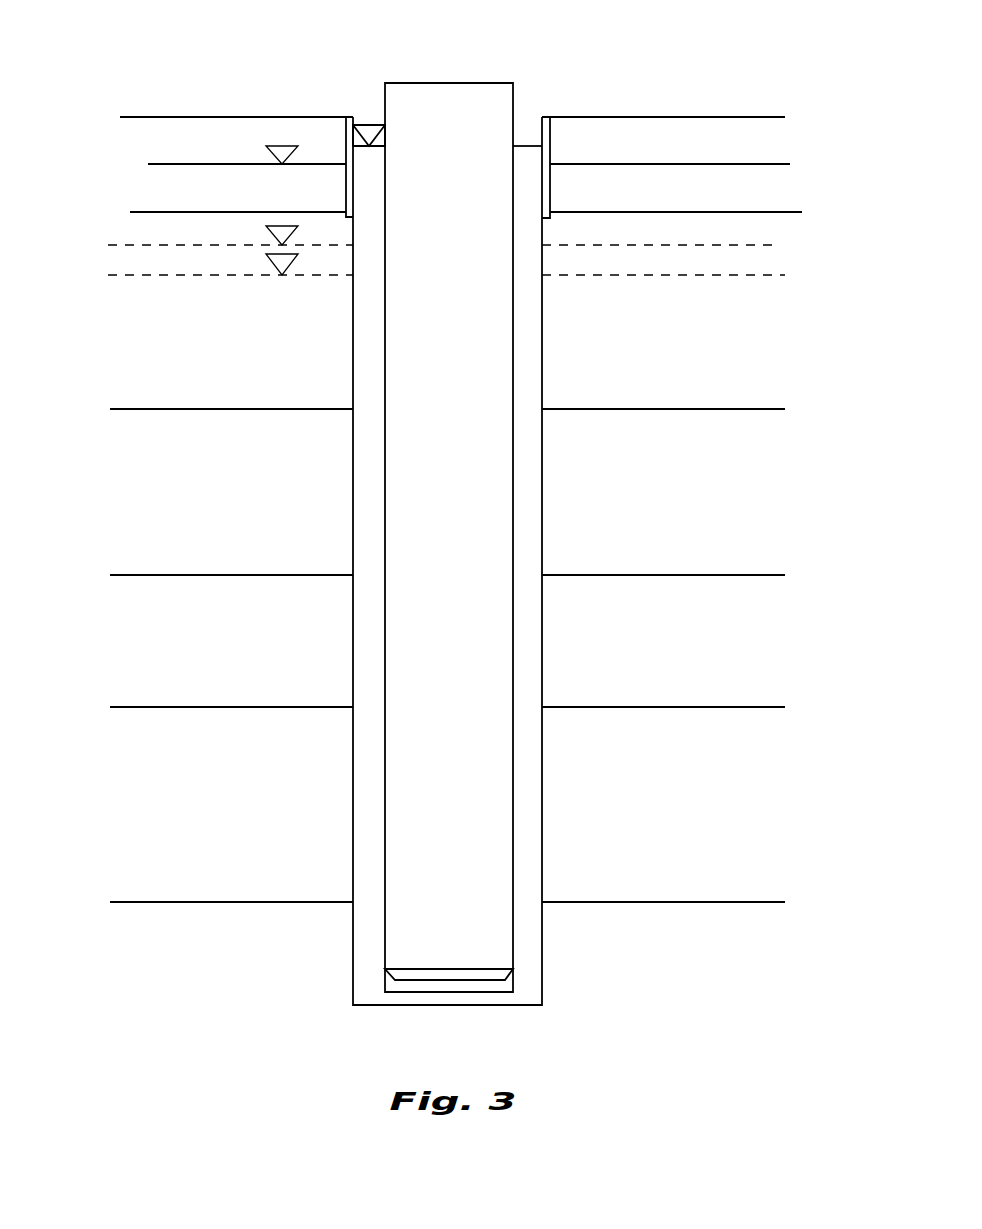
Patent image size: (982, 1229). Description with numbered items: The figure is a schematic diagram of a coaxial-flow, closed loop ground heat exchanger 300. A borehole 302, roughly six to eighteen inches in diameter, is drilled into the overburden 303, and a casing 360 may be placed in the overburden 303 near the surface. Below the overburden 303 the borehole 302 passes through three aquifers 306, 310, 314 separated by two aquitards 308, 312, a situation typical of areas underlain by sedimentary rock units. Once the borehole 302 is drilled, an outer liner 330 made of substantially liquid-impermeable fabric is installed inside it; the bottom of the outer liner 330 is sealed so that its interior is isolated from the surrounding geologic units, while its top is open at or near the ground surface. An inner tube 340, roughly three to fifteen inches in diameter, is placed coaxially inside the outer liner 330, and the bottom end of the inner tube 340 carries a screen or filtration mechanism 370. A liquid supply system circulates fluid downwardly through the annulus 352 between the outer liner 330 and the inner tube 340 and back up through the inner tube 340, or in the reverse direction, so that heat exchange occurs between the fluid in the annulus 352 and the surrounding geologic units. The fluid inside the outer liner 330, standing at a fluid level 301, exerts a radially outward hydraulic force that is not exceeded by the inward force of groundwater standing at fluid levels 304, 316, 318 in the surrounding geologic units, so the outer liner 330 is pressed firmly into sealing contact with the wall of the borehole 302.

The coaxial-flow closed loop ground heat exchanger 300 is at (519, 50).
The fluid level 301 is at (358, 122).
The borehole 302 is at (550, 187).
The overburden 303 is at (466, 193).
The fluid level 304 is at (443, 164).
The aquifer 306 is at (447, 389).
The aquitard 308 is at (447, 551).
The aquifer 310 is at (447, 682).
The aquitard 312 is at (447, 850).
The aquifer 314 is at (507, 953).
The fluid level 316 is at (418, 243).
The fluid level 318 is at (421, 272).
The outer liner 330 is at (544, 357).
The inner tube 340 is at (515, 532).
The annulus 352 is at (367, 501).
The casing 360 is at (550, 150).
The screen or filtration mechanism 370 is at (513, 975).